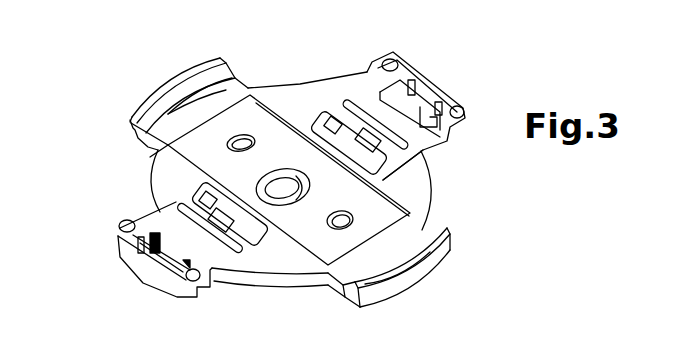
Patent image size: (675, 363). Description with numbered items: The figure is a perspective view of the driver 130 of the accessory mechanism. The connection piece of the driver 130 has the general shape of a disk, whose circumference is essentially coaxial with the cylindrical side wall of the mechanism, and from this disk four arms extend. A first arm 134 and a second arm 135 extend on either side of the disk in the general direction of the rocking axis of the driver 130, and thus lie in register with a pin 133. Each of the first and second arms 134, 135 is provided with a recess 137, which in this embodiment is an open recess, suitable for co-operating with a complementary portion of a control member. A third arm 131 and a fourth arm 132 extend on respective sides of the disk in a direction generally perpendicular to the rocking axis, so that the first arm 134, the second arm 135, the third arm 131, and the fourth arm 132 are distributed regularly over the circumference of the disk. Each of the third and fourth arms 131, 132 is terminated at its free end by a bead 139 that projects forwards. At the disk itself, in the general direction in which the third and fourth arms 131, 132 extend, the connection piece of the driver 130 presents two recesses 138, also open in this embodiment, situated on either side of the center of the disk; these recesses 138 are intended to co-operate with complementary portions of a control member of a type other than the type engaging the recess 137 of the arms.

The driver 130 is at (160, 55).
The third arm 131 is at (132, 123).
The fourth arm 132 is at (337, 297).
The pin 133 is at (362, 127).
The first arm 134 is at (400, 68).
The second arm 135 is at (137, 264).
The recess 137 is at (168, 249).
The recesses 138 is at (363, 211).
The bead 139 is at (143, 99).